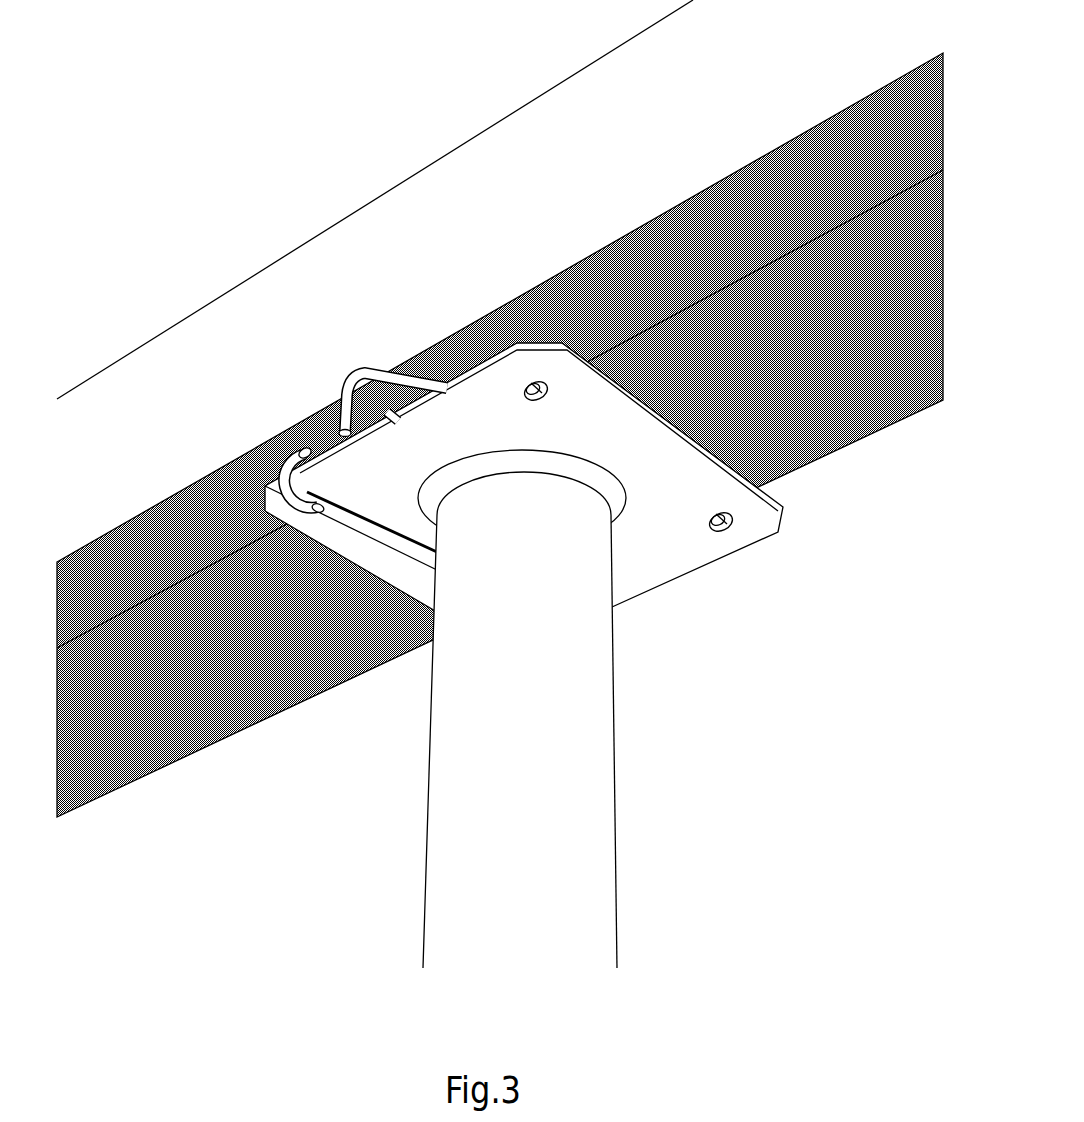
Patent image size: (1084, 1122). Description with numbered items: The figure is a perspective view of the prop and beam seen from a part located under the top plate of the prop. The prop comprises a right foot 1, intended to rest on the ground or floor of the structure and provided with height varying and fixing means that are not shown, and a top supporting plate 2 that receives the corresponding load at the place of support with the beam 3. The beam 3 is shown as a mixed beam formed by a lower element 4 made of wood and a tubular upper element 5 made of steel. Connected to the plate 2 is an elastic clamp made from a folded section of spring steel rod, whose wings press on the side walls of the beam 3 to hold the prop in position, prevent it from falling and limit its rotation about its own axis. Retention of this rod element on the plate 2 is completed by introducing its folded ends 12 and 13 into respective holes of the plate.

The right foot 1 is at (595, 798).
The top supporting plate 2 is at (648, 573).
The beam 3 is at (474, 655).
The lower element 4 is at (197, 735).
The tubular upper element 5 is at (302, 273).
The folded end 12 is at (737, 521).
The folded end 13 is at (549, 393).